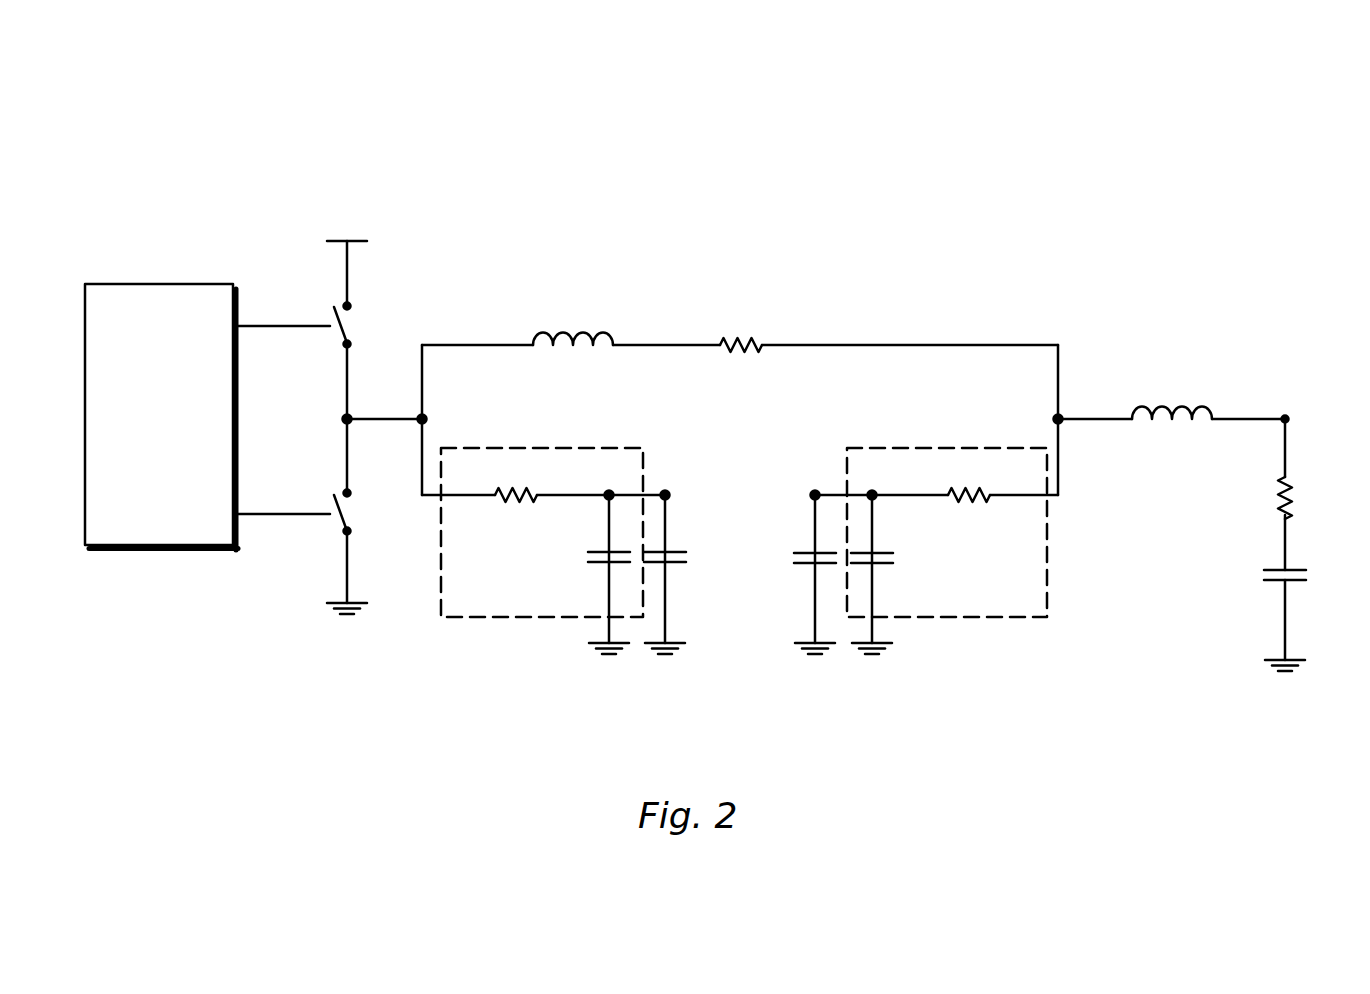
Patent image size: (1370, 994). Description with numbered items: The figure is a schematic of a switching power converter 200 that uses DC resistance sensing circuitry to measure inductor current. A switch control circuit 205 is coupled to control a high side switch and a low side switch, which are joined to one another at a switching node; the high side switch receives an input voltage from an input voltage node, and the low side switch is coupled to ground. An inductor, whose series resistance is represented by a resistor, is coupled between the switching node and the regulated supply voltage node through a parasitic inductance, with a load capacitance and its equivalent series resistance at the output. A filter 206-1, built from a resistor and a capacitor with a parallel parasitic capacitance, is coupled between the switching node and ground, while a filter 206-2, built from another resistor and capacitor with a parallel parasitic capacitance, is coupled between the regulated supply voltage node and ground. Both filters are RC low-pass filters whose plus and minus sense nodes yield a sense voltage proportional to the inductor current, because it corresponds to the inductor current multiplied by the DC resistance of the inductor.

The power converter 200 is at (855, 148).
The switch control circuit 205 is at (146, 457).
The filter 206-1 is at (507, 437).
The filter 206-2 is at (888, 440).